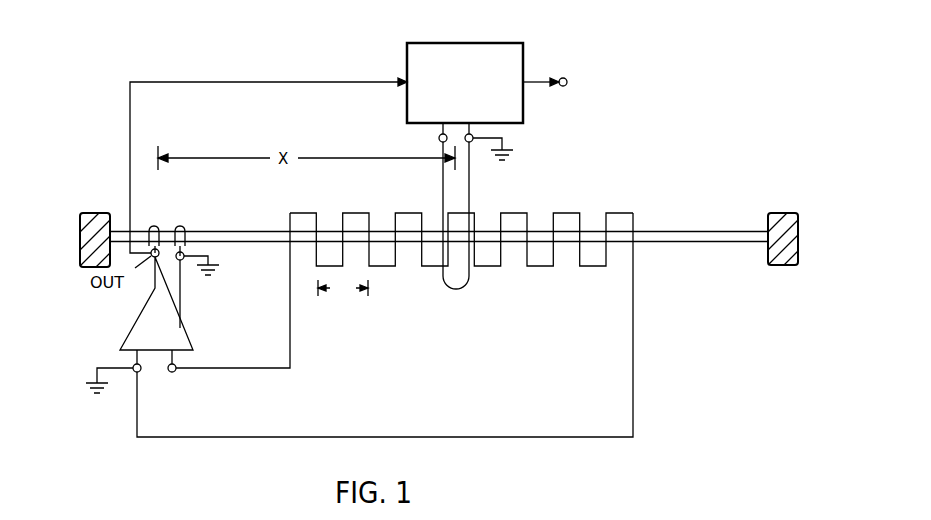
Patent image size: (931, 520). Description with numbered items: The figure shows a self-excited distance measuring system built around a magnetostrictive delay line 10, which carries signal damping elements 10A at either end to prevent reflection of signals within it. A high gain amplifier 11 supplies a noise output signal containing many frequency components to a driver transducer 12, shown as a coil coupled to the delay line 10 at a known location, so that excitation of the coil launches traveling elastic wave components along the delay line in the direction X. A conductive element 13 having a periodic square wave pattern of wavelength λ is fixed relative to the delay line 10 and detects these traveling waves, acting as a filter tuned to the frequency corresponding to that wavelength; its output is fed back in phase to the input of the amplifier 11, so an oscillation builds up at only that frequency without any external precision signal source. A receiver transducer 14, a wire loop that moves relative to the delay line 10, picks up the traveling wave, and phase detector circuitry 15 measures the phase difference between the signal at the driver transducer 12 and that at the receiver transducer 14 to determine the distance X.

The magnetostrictive delay line 10 is at (675, 232).
The signal damping elements 10A is at (88, 212).
The high gain amplifier 11 is at (140, 313).
The driver transducer 12 is at (162, 224).
The conductive element 13 is at (540, 206).
The receiver transducer 14 is at (476, 195).
The phase detector circuitry 15 is at (495, 50).